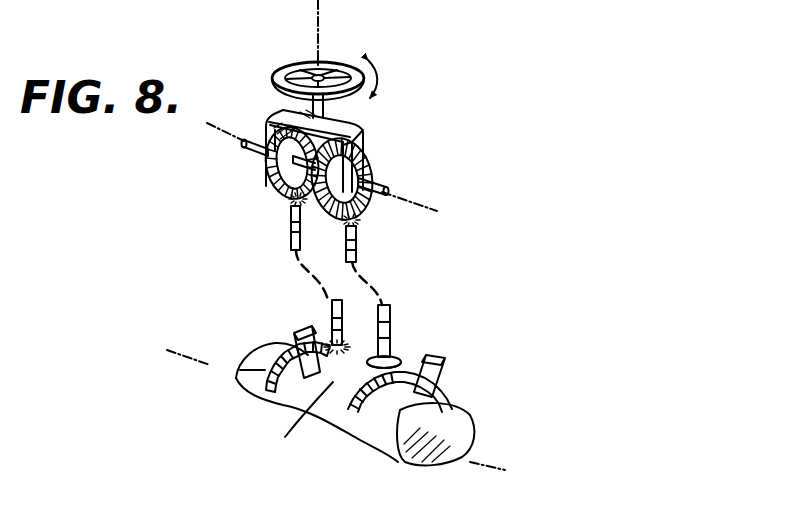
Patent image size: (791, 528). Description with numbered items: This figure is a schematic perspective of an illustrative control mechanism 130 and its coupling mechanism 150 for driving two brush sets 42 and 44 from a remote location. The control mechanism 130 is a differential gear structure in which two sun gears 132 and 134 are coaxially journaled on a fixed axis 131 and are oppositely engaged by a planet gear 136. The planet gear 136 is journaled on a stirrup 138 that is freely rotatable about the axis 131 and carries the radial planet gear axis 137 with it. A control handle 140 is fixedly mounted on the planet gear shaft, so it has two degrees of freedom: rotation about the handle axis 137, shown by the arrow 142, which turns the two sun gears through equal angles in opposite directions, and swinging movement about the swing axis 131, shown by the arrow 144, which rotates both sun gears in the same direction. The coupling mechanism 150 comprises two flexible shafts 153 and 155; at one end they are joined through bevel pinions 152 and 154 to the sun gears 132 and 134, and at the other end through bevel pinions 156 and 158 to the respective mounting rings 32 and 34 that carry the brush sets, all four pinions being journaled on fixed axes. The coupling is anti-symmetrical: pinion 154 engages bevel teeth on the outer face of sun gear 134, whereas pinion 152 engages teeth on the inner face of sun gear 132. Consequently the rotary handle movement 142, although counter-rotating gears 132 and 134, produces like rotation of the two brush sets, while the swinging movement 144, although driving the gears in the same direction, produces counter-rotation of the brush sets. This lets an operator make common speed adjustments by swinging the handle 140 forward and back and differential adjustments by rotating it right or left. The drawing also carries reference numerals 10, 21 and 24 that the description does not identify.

The tool holder assembly 10 is at (226, 416).
The axis of rotation 21 is at (470, 462).
The body 24 is at (388, 447).
The mounting ring 32 is at (243, 371).
The mounting ring 34 is at (386, 444).
The brush set 42 is at (290, 333).
The brush set 44 is at (452, 356).
The control mechanism 130 is at (250, 190).
The fixed axis 131 is at (396, 193).
The sun gear 132 is at (272, 196).
The sun gear 134 is at (370, 155).
The planet gear 136 is at (263, 157).
The planet gear axis 137 is at (322, 21).
The stirrup 138 is at (350, 127).
The control handle 140 is at (346, 68).
The arrow indicating rotation 142 is at (379, 80).
The arrow indicating swinging movement 144 is at (232, 113).
The coupling mechanism 150 is at (290, 290).
The bevel pinion 152 is at (283, 208).
The flexible shaft 153 is at (288, 254).
The bevel pinion 154 is at (357, 216).
The flexible shaft 155 is at (354, 262).
The bevel pinion 156 is at (300, 418).
The bevel pinion 158 is at (403, 350).